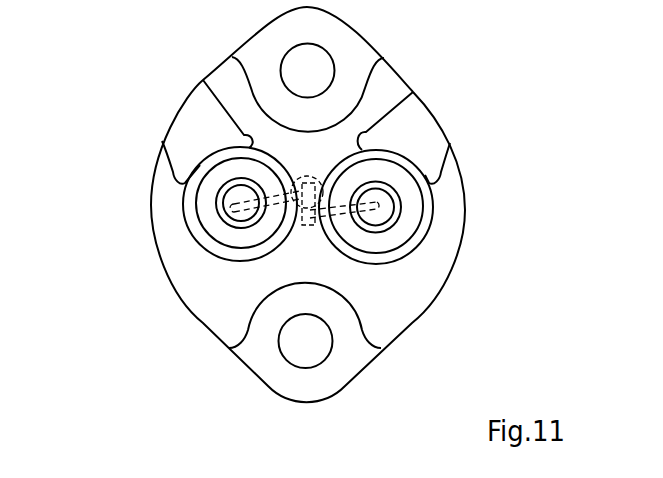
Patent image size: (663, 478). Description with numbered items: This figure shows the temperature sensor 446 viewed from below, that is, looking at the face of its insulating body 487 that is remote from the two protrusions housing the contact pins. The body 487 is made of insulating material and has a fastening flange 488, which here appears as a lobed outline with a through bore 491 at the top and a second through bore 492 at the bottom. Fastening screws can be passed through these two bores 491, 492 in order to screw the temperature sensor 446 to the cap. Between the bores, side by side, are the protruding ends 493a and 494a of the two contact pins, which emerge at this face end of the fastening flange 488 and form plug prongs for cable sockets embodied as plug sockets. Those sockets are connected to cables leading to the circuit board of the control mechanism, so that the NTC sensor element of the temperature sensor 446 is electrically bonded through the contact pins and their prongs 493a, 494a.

The temperature sensor 446 is at (196, 65).
The body 487 is at (464, 198).
The fastening flange 488 is at (355, 60).
The through bore 491 is at (309, 61).
The through bore 492 is at (297, 347).
The protruding end of contact pin 493a is at (233, 205).
The protruding end of contact pin 494a is at (387, 212).